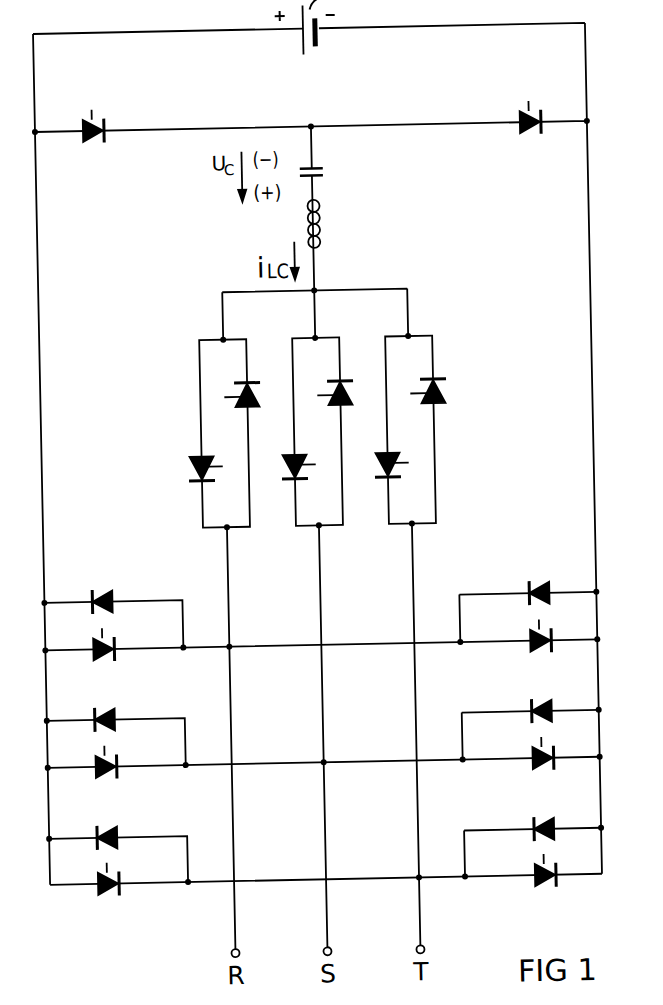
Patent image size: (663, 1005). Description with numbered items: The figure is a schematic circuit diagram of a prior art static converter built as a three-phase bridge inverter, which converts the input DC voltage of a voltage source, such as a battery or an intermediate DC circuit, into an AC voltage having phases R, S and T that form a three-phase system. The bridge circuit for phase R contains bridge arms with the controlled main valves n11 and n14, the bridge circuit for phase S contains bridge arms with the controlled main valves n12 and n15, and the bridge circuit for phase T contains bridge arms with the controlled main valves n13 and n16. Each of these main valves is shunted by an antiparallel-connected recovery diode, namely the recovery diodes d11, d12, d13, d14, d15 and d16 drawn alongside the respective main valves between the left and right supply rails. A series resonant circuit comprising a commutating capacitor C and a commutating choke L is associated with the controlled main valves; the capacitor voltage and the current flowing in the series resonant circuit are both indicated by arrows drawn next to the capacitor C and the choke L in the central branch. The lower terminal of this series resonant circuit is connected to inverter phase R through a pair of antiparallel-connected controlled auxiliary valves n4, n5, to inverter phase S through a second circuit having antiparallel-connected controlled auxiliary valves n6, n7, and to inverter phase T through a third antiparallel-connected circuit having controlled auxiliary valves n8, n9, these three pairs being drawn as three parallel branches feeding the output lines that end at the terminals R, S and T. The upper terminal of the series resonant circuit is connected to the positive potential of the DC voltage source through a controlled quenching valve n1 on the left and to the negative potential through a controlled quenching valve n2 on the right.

The controlled quenching valve n1 is at (98, 145).
The controlled quenching valve n2 is at (526, 143).
The controlled auxiliary valve n4 is at (200, 485).
The controlled auxiliary valve n5 is at (252, 388).
The controlled auxiliary valve n6 is at (293, 485).
The controlled auxiliary valve n7 is at (345, 388).
The controlled auxiliary valve n8 is at (386, 485).
The controlled auxiliary valve n9 is at (438, 388).
The controlled main valve n11 is at (100, 645).
The controlled main valve n12 is at (99, 761).
The controlled main valve n13 is at (97, 881).
The controlled main valve n14 is at (519, 645).
The controlled main valve n15 is at (521, 761).
The controlled main valve n16 is at (520, 878).
The recovery diode d11 is at (97, 595).
The recovery diode d12 is at (96, 715).
The recovery diode d13 is at (97, 830).
The recovery diode d14 is at (516, 600).
The recovery diode d15 is at (520, 715).
The recovery diode d16 is at (521, 830).
The commutating capacitor C is at (320, 178).
The commutating choke L is at (319, 228).